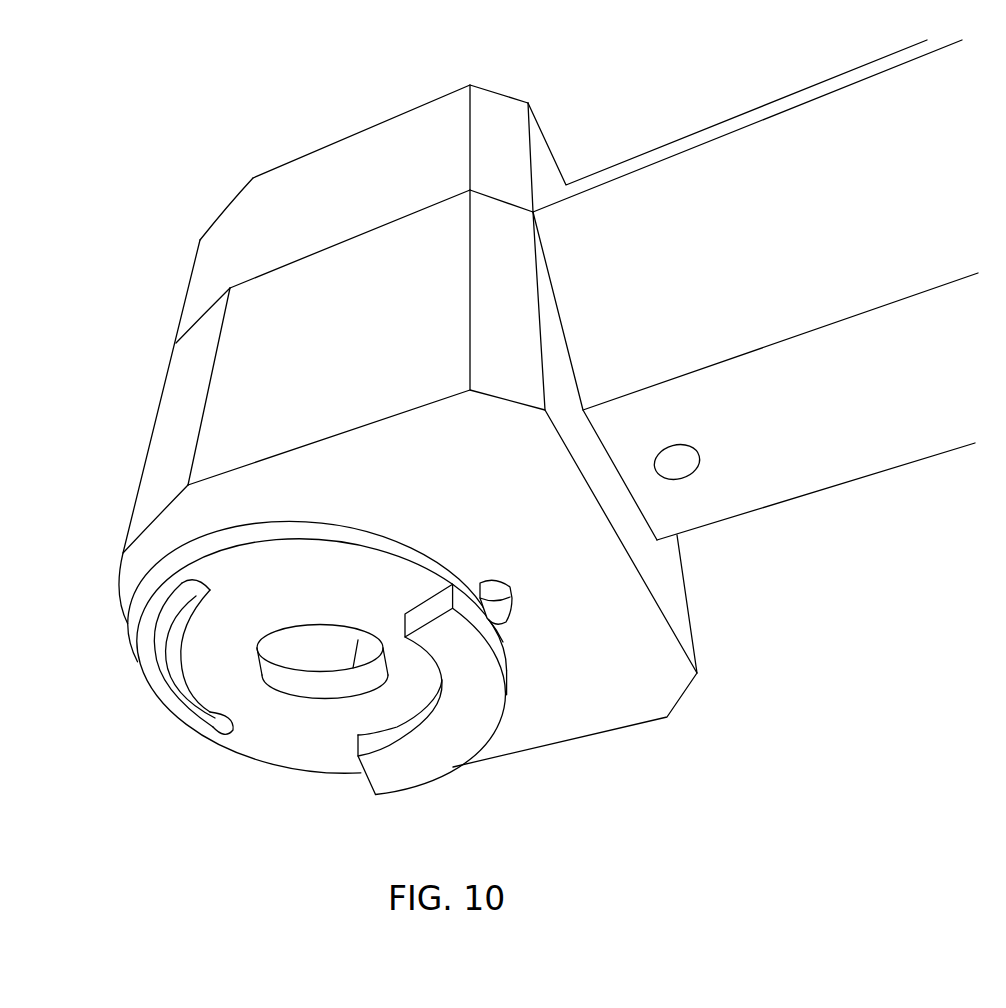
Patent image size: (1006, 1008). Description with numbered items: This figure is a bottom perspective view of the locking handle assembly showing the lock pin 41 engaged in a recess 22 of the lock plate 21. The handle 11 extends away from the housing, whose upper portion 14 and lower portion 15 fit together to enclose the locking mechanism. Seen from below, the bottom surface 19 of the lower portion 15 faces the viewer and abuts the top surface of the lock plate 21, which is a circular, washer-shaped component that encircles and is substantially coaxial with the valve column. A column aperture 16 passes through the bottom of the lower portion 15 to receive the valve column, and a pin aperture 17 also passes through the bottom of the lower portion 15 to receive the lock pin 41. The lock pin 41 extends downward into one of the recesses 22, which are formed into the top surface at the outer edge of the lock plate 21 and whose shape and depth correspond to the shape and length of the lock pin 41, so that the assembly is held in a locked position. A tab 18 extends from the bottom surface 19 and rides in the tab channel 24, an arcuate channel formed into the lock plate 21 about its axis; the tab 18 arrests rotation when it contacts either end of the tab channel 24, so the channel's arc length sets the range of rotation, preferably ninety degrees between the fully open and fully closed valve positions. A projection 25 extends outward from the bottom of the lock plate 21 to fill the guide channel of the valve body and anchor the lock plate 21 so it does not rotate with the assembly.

The handle 11 is at (688, 133).
The upper portion 14 is at (323, 148).
The lower portion 15 is at (155, 415).
The column aperture 16 is at (323, 672).
The pin aperture 17 is at (498, 582).
The tab 18 is at (225, 730).
The bottom surface 19 is at (470, 499).
The lock plate 21 is at (158, 562).
The recesses 22 is at (497, 628).
The tab channel 24 is at (153, 670).
The projection 25 is at (498, 723).
The lock pin 41 is at (512, 603).